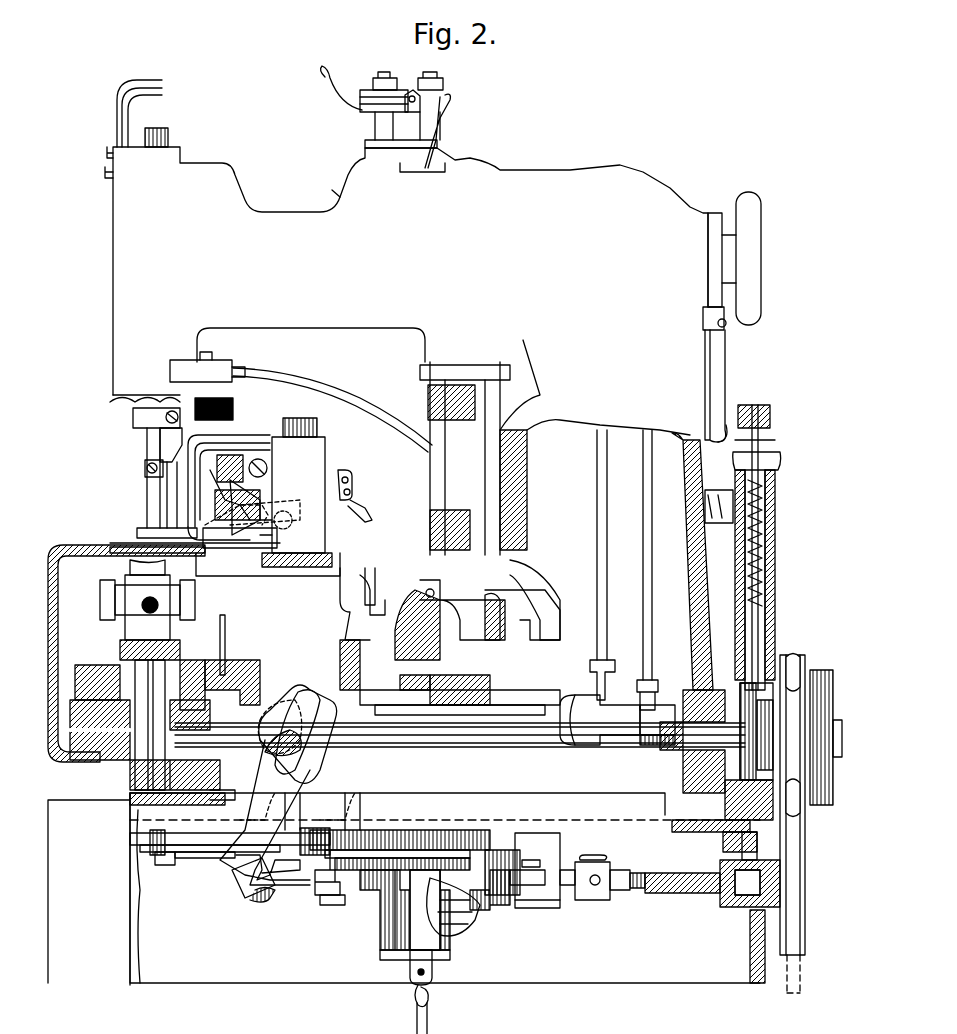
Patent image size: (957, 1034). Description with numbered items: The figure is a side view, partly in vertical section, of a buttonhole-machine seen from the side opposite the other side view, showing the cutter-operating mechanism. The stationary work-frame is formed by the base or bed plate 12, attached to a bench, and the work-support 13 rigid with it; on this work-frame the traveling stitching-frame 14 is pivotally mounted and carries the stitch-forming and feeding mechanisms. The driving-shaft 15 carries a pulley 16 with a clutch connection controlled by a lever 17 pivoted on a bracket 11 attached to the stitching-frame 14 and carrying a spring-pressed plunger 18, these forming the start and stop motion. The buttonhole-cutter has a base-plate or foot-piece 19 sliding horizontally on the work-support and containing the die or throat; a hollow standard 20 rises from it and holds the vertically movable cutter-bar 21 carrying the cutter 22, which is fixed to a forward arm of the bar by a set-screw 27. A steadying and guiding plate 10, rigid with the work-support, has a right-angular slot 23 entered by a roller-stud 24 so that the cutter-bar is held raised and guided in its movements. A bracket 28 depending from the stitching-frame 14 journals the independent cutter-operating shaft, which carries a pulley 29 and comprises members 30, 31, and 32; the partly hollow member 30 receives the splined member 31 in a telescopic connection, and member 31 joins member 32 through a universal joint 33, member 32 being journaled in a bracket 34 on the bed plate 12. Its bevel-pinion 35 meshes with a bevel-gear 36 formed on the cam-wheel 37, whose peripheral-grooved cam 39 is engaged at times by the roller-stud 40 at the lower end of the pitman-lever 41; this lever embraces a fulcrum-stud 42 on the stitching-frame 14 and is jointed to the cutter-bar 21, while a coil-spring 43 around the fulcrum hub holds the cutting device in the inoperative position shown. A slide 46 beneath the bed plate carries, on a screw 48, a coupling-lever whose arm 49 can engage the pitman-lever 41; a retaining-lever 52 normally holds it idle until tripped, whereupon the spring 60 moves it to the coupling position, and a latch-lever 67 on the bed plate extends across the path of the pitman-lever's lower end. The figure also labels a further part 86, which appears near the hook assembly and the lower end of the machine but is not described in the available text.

The steadying and guiding plate 10 is at (222, 452).
The bracket 11 is at (725, 605).
The base or bed plate 12 is at (406, 889).
The work-support 13 is at (58, 628).
The stitching-frame 14 is at (433, 259).
The driving-shaft 15 is at (485, 749).
The pulley 16 is at (795, 675).
The lever 17 is at (770, 552).
The spring-pressed plunger 18 is at (762, 575).
The base-plate or foot-piece 19 is at (203, 548).
The hollow standard 20 is at (270, 485).
The cutter-bar 21 is at (300, 420).
The cutter 22 is at (212, 494).
The right-angular slot 23 is at (192, 395).
The roller-stud 24 is at (265, 435).
The set-screw 27 is at (268, 470).
The bracket 28 is at (745, 790).
The pulley 29 is at (805, 895).
The shaft member 30 is at (728, 906).
The shaft member 31 is at (640, 895).
The shaft member 32 is at (520, 895).
The universal joint 33 is at (592, 895).
The bracket 34 is at (537, 870).
The bevel-pinion 35 is at (490, 900).
The bevel-gear 36 is at (370, 900).
The cam-wheel 37 is at (355, 912).
The peripheral-grooved cam 39 is at (314, 893).
The roller-stud 40 is at (250, 895).
The pitman-lever 41 is at (270, 778).
The fulcrum-stud 42 is at (300, 712).
The coil-spring 43 is at (268, 710).
The slide 46 is at (150, 828).
The screw 48 is at (150, 852).
The arm 49 is at (195, 860).
The retaining-lever 52 is at (165, 866).
The spring 60 is at (150, 850).
The latch-lever 67 is at (272, 880).
The knee lifter chain 86 is at (412, 578).